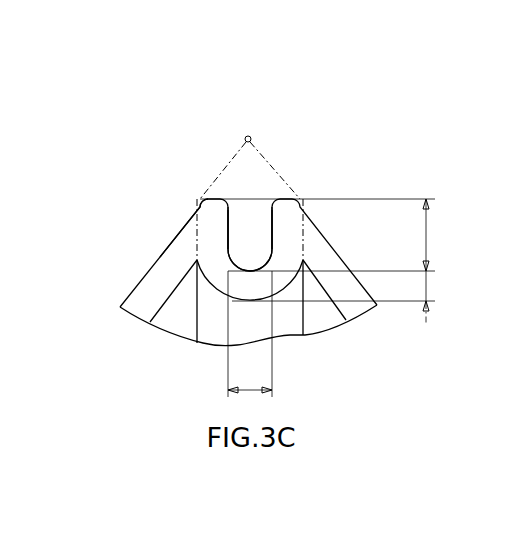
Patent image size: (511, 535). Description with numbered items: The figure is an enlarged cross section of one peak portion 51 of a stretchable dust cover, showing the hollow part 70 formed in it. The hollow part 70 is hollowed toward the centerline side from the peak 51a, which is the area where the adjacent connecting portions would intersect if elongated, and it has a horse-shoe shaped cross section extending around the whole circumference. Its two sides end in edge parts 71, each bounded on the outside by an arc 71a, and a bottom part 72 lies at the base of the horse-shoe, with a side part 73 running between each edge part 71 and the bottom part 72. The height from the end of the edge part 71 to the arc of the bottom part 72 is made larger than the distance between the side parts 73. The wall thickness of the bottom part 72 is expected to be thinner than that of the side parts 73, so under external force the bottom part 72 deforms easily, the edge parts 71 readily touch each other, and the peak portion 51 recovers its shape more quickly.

The peak portion 51 is at (411, 157).
The peak 51a is at (248, 136).
The hollow part 70 is at (253, 188).
The edge part 71 is at (215, 199).
The arc 71a is at (198, 202).
The bottom part 72 is at (240, 300).
The side part 73 is at (228, 235).